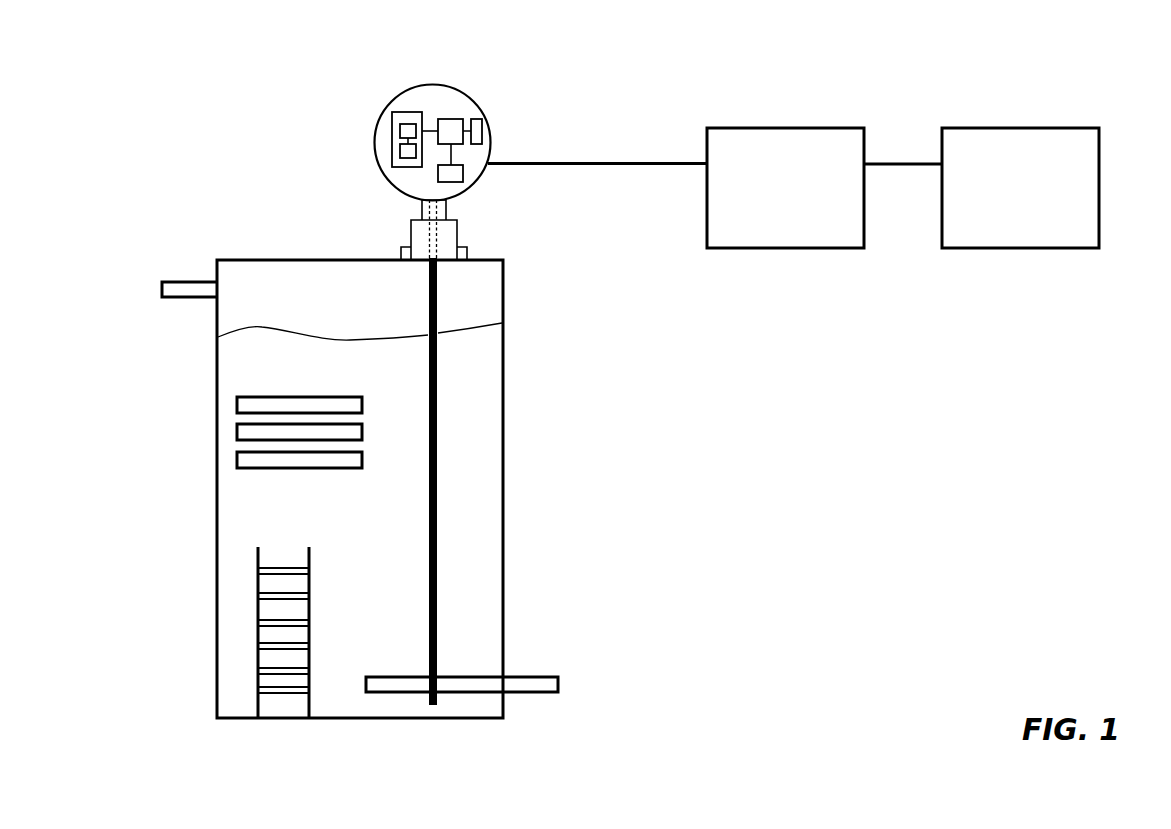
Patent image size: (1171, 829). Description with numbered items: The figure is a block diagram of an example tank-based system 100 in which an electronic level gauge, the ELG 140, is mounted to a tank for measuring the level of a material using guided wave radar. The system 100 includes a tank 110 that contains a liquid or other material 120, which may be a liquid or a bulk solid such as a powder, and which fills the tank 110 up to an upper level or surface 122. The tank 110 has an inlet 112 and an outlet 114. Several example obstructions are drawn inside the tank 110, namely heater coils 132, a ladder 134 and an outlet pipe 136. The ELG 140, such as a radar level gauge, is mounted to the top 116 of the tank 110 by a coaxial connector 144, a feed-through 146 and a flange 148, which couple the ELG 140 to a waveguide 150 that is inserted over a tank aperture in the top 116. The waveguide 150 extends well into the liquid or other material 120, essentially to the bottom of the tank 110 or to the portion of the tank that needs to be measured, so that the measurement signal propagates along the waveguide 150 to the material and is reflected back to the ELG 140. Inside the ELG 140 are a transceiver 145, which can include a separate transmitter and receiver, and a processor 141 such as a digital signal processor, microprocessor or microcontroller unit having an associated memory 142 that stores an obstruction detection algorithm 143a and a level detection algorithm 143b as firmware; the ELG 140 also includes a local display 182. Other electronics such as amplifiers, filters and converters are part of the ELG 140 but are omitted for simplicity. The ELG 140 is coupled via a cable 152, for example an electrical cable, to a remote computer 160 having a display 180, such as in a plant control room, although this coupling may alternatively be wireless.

The tank-based system 100 is at (170, 72).
The tank 110 is at (217, 389).
The inlet 112 is at (162, 295).
The outlet 114 is at (558, 692).
The top of tank 116 is at (490, 260).
The liquid or other material 120 is at (484, 455).
The upper level or surface 122 is at (272, 327).
The heater coils 132 is at (237, 432).
The ladder 134 is at (258, 624).
The outlet pipe 136 is at (475, 677).
The ELG 140 is at (400, 95).
The processor 141 is at (452, 119).
The memory 142 is at (392, 138).
The obstruction detection algorithm 143a is at (400, 127).
The level detection algorithm 143b is at (400, 157).
The coaxial connector 144 is at (423, 212).
The transceiver 145 is at (463, 175).
The feed-through 146 is at (411, 235).
The flange 148 is at (401, 250).
The waveguide 150 is at (437, 296).
The cable 152 is at (590, 163).
The remote computer 160 is at (824, 188).
The display 180 is at (1020, 188).
The local display 182 is at (480, 128).